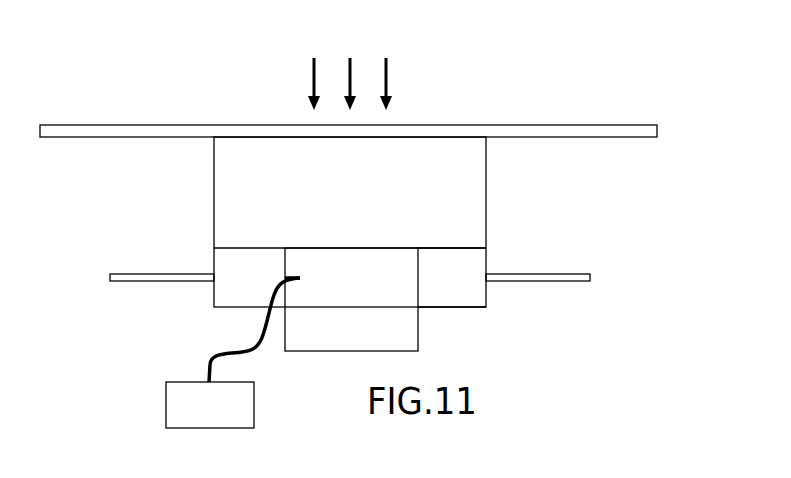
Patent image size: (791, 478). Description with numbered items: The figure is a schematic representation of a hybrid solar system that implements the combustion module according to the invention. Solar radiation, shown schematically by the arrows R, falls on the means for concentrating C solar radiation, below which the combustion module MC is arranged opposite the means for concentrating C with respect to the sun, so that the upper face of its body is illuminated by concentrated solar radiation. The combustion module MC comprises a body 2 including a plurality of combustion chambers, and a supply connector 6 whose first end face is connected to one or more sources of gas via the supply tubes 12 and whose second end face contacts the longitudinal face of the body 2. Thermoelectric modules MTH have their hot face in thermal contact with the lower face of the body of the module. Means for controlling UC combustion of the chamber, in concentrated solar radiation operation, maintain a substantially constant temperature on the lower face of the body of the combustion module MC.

The solar radiation R is at (386, 68).
The means for concentrating solar radiation C is at (618, 118).
The combustion module MC is at (510, 240).
The thermoelectric modules MTH is at (432, 331).
The body 2 is at (297, 269).
The means for controlling combustion UC is at (178, 394).
The supply tubes 12 is at (120, 277).
The supply connector 6 is at (473, 299).